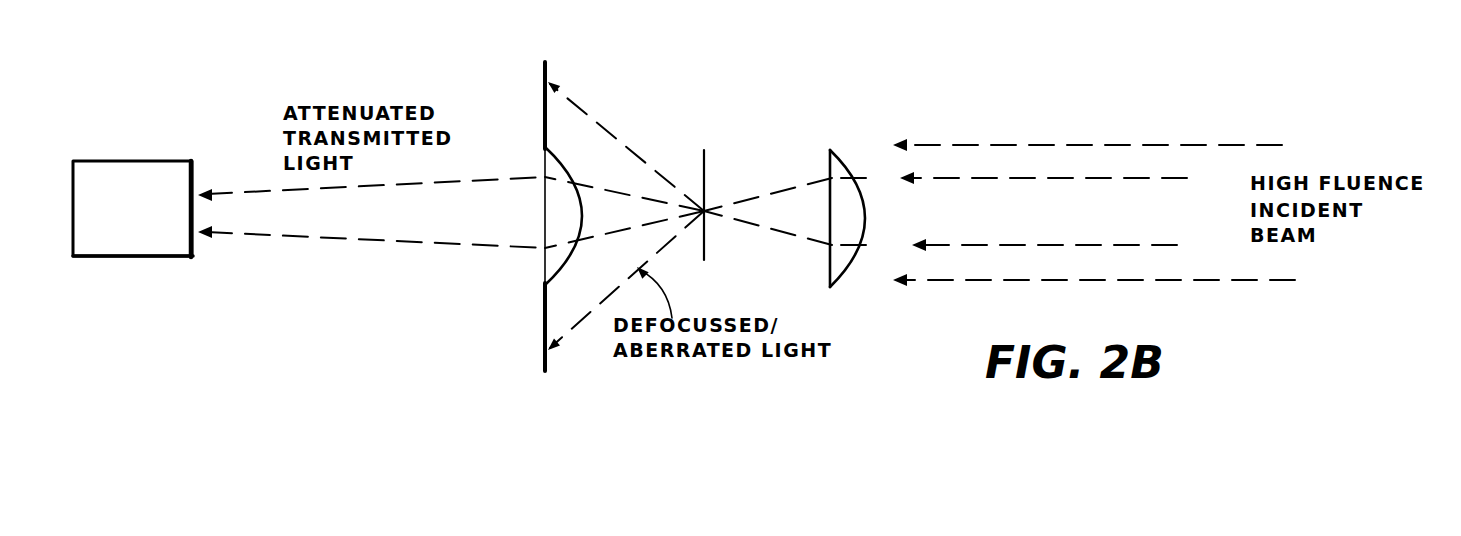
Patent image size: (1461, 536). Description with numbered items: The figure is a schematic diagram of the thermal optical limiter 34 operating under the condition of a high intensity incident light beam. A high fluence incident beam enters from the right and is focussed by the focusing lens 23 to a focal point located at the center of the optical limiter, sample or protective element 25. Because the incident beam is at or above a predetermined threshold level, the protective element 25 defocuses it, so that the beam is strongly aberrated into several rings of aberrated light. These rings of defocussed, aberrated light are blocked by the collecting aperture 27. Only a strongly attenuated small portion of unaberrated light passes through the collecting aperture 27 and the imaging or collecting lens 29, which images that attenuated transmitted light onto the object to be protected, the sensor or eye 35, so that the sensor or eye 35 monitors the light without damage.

The focusing lens 23 is at (866, 223).
The optical limiter sample 25 is at (706, 163).
The collecting aperture 27 is at (547, 69).
The imaging lens 29 is at (553, 283).
The thermal optical limiter 34 is at (820, 87).
The sensor or eye 35 is at (146, 160).